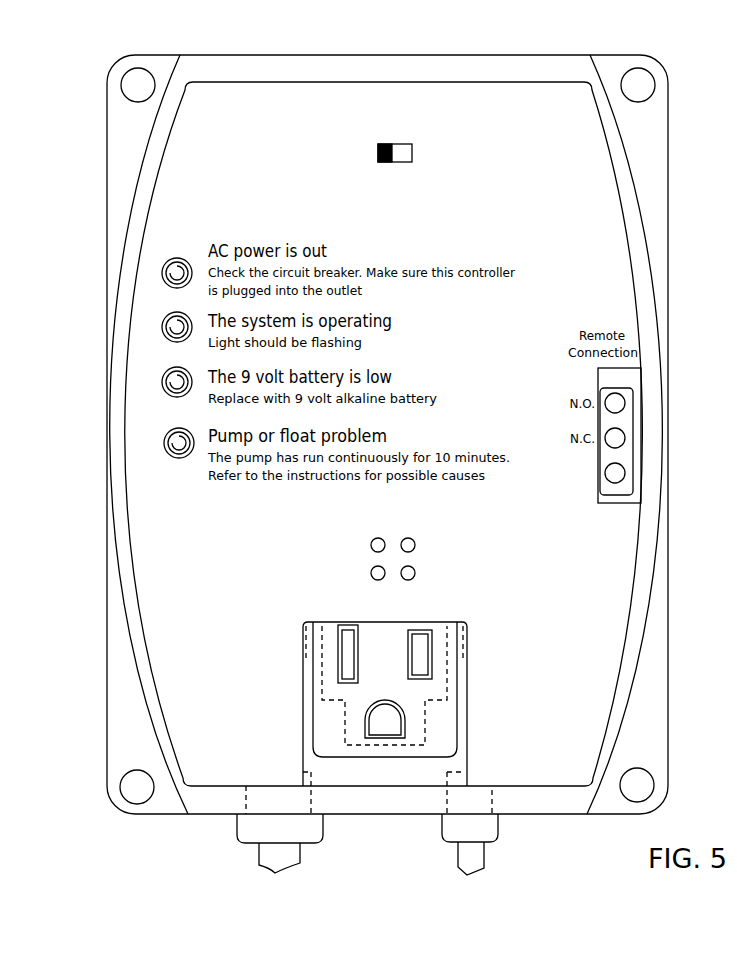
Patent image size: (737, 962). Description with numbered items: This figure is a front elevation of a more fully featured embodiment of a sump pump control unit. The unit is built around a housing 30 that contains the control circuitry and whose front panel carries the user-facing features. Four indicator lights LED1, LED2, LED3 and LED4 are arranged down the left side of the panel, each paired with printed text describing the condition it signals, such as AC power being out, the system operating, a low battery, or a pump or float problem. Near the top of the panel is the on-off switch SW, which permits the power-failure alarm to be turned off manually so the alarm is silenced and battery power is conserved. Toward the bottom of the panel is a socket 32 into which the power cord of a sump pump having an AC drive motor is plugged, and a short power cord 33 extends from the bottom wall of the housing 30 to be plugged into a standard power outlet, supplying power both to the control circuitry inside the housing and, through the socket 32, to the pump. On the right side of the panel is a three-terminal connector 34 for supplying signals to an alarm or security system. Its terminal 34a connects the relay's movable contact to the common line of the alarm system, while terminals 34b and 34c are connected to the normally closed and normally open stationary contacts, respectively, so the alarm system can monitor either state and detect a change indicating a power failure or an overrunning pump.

The housing 30 is at (598, 70).
The on-off switch SW is at (396, 150).
The indicator light LED1 is at (162, 275).
The indicator light LED2 is at (162, 331).
The indicator light LED3 is at (162, 388).
The indicator light LED4 is at (164, 448).
The connector 34 is at (630, 423).
The terminal 34a is at (619, 476).
The terminal 34b is at (619, 440).
The terminal 34c is at (620, 401).
The socket 32 is at (397, 752).
The power cord 33 is at (474, 860).